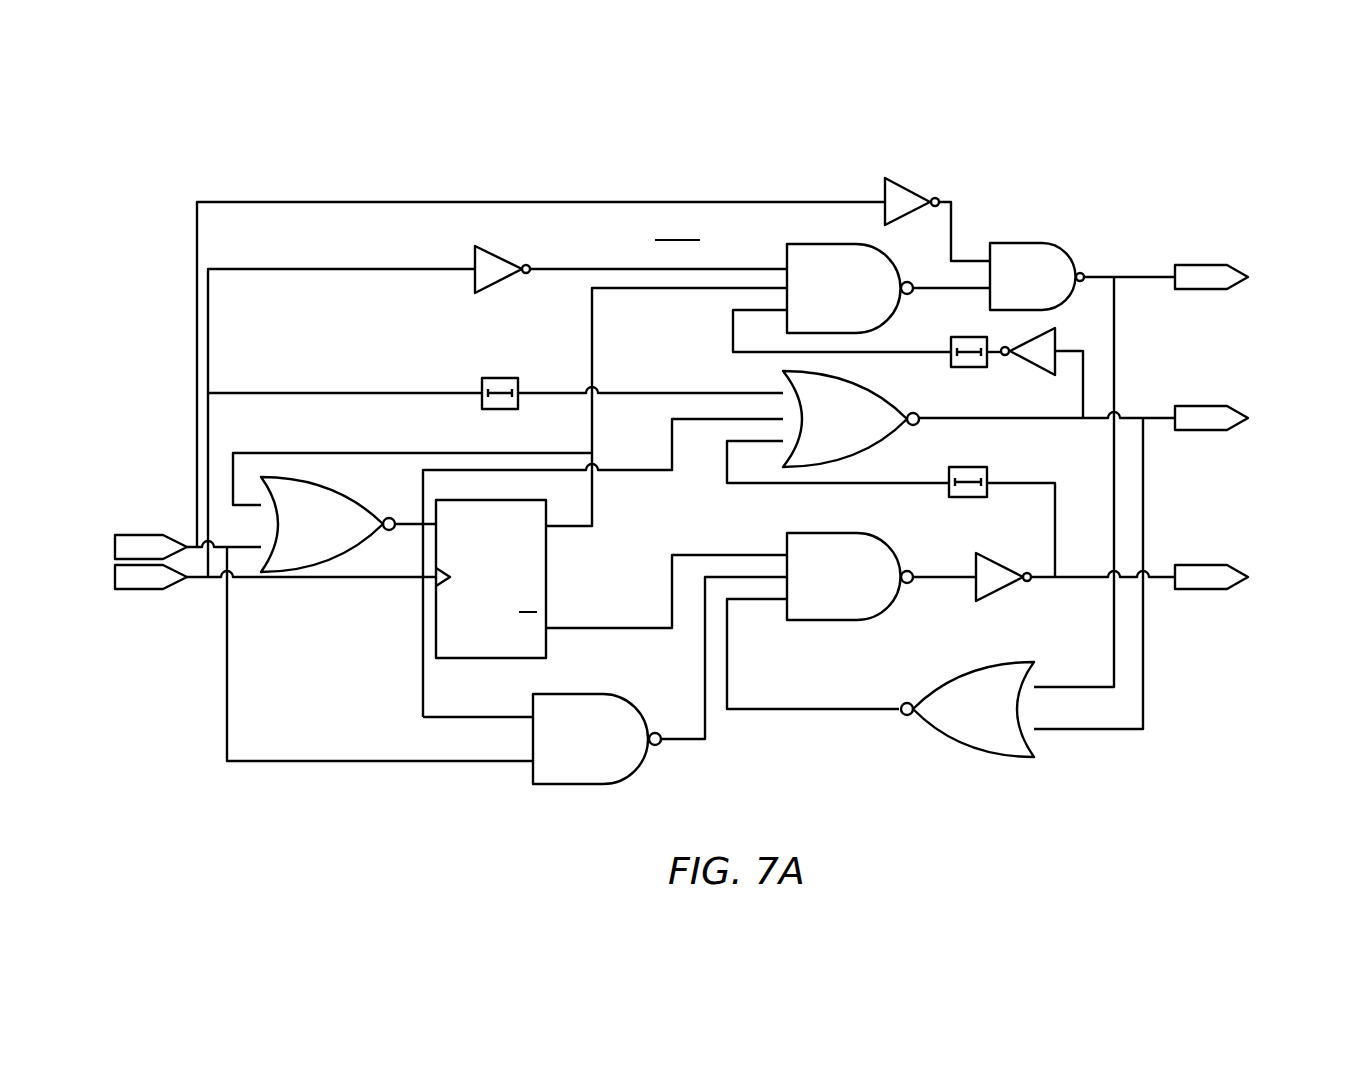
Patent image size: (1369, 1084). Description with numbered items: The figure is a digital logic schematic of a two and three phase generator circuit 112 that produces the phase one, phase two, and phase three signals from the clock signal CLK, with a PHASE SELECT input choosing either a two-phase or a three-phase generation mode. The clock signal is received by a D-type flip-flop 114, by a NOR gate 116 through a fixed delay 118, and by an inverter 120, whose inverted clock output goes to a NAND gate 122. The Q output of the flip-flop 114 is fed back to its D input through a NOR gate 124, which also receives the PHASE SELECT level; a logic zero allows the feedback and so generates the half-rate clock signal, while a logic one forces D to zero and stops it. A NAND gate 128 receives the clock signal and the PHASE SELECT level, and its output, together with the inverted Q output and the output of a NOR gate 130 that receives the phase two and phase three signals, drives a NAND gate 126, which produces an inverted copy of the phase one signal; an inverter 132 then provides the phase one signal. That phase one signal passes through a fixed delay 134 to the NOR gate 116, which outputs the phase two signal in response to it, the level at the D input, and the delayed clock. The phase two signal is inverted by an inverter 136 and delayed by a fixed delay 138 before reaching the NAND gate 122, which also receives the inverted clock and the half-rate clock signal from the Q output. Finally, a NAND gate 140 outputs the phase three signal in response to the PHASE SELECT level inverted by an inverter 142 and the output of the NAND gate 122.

The two and three phase generator circuit 112 is at (722, 143).
The D-type flip-flop 114 is at (514, 585).
The NOR gate 116 is at (857, 428).
The fixed delay 118 is at (496, 378).
The inverter 120 is at (493, 257).
The NAND gate 122 is at (854, 301).
The NOR gate 124 is at (337, 535).
The NAND gate 126 is at (853, 590).
The NAND gate 128 is at (603, 752).
The NOR gate 130 is at (992, 720).
The inverter 132 is at (1000, 590).
The fixed delay 134 is at (969, 467).
The inverter 136 is at (1024, 360).
The fixed delay 138 is at (959, 368).
The NAND gate 140 is at (1045, 288).
The inverter 142 is at (906, 191).